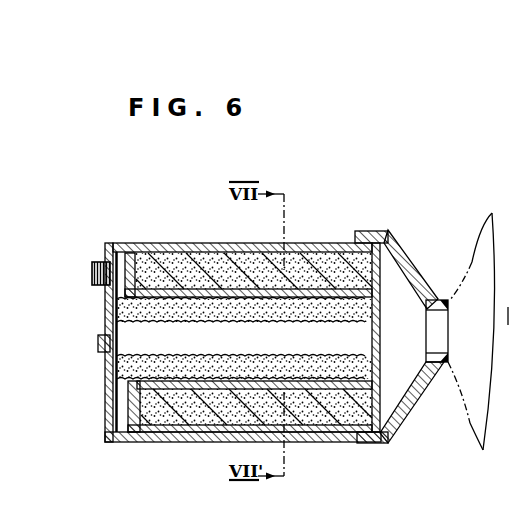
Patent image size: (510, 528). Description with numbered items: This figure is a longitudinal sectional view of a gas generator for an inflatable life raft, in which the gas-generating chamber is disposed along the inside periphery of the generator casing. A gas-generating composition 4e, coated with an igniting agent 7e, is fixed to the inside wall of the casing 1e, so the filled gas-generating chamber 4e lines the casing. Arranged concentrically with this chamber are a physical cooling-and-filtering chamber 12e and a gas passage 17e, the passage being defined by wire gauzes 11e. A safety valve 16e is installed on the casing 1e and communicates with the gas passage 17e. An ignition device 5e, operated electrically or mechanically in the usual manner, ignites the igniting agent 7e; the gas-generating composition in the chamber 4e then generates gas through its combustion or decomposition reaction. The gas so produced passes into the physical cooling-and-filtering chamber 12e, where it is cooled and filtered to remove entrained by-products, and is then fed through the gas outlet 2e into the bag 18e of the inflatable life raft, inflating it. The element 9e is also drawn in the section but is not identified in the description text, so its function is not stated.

The casing 1e is at (309, 242).
The gas outlet 2e is at (405, 350).
The gas-generating composition 4e is at (213, 270).
The ignition device 5e is at (96, 272).
The igniting agent 7e is at (175, 292).
The spacer member 9e is at (117, 258).
The wire gauzes 11e is at (114, 321).
The physical cooling-and-filtering chamber 12e is at (128, 386).
The safety valve 16e is at (98, 343).
The gas passage 17e is at (328, 338).
The bag 18e is at (472, 252).